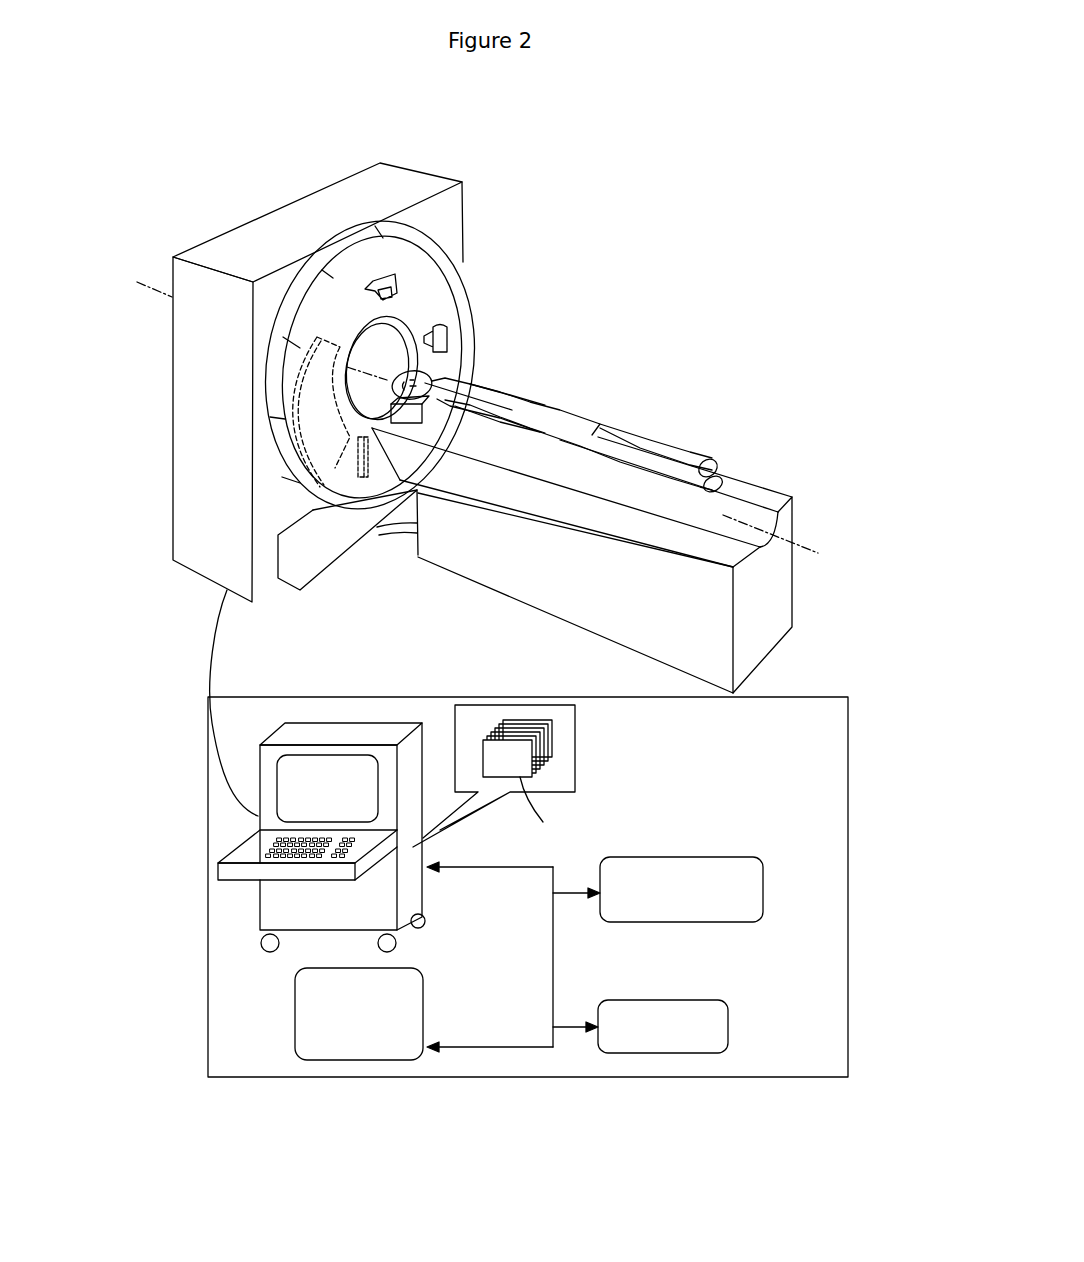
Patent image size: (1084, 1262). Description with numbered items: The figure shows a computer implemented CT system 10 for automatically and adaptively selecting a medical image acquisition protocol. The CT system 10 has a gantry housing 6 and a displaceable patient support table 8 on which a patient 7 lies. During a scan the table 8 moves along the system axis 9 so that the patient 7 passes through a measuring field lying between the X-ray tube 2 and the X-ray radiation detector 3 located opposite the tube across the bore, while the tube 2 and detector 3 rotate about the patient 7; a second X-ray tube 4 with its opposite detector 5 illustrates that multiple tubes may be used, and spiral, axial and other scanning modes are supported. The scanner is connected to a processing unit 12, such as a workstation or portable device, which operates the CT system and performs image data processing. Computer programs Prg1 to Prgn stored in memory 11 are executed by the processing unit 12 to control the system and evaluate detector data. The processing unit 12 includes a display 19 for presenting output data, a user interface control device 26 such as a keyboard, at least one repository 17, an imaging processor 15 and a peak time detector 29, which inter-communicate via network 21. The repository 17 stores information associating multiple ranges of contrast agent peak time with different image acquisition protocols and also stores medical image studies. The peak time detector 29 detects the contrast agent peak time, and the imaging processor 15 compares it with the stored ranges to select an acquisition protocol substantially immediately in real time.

The X-ray tube 2 is at (393, 280).
The X-ray radiation detector 3 is at (368, 462).
The second X-ray tube 4 is at (447, 338).
The detector 5 is at (323, 463).
The gantry housing 6 is at (195, 548).
The patient 7 is at (473, 395).
The displaceable patient support table 8 is at (567, 598).
The system axis 9 is at (813, 550).
The CT system 10 is at (489, 95).
The memory 11 is at (580, 732).
The processing unit 12 is at (848, 808).
The imaging processor 15 is at (300, 1047).
The repository 17 is at (740, 912).
The display 19 is at (290, 793).
The network 21 is at (552, 1015).
The user interface control device 26 is at (255, 852).
The peak time detector 29 is at (603, 1050).